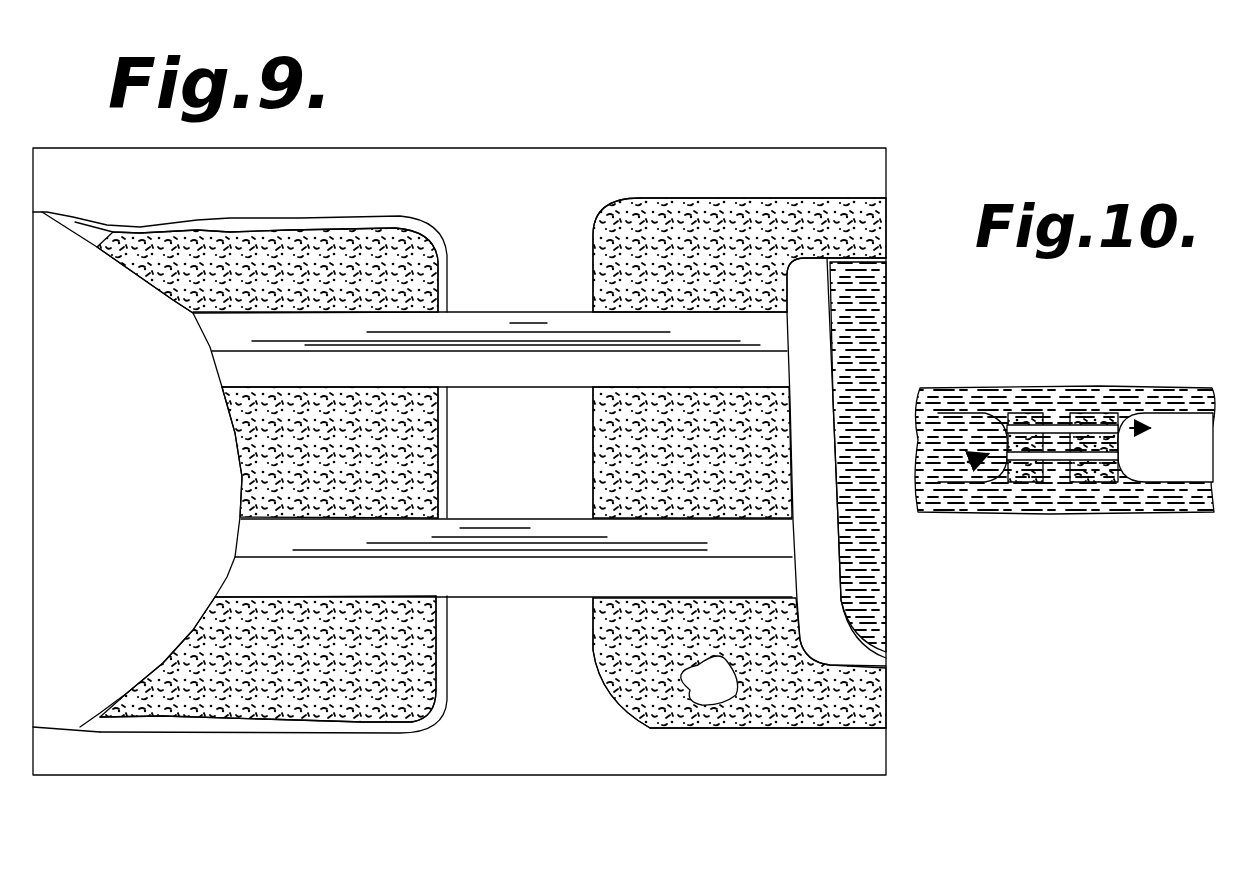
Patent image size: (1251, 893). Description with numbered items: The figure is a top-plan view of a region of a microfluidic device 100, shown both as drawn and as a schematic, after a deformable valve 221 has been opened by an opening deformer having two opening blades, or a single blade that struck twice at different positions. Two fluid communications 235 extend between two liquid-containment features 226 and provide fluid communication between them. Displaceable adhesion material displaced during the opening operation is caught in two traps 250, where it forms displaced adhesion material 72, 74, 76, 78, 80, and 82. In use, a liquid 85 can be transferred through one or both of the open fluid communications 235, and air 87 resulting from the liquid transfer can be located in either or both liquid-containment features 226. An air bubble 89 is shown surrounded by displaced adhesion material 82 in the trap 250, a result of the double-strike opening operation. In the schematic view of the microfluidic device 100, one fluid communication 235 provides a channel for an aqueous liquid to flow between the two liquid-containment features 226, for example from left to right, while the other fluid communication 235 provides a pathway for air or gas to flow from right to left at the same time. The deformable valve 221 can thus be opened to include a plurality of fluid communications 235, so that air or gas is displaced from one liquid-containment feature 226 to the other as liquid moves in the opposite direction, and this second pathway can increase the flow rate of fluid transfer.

In FIG. 9, the displaced adhesion material 72 is at (378, 700).
In FIG. 9, the displaced adhesion material 74 is at (245, 480).
In FIG. 9, the displaced adhesion material 76 is at (243, 270).
In FIG. 9, the displaced adhesion material 78 is at (752, 212).
In FIG. 9, the displaced adhesion material 80 is at (760, 405).
In FIG. 9, the displaced adhesion material 82 is at (805, 690).
In FIG. 9, the liquid 85 is at (878, 272).
In FIG. 10, the liquid 85 is at (977, 437).
In FIG. 9, the air 87 is at (822, 598).
In FIG. 9, the air bubble 89 is at (708, 697).
In FIG. 10, the microfluidic device 100 is at (1135, 502).
In FIG. 9, the deformable valve 221 is at (560, 240).
In FIG. 10, the deformable valve 221 is at (1040, 497).
In FIG. 9, the liquid-containment feature 226 is at (148, 570).
In FIG. 10, the liquid-containment feature 226 is at (955, 440).
In FIG. 9, the fluid communication 235 is at (482, 337).
In FIG. 10, the fluid communication 235 is at (1058, 435).
In FIG. 9, the trap 250 is at (372, 235).